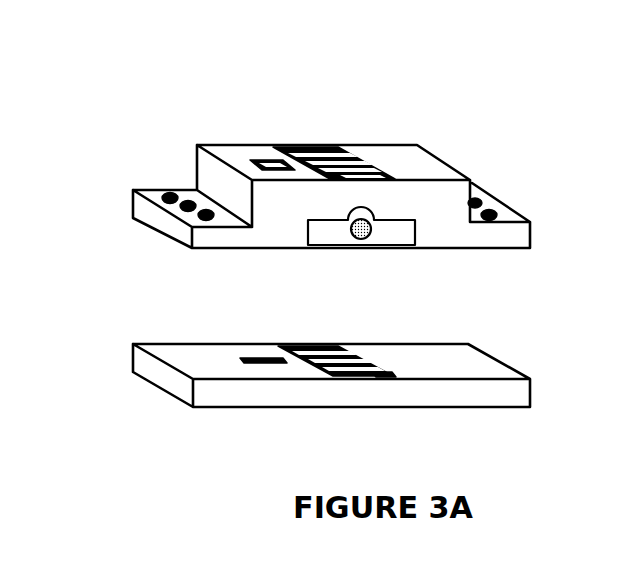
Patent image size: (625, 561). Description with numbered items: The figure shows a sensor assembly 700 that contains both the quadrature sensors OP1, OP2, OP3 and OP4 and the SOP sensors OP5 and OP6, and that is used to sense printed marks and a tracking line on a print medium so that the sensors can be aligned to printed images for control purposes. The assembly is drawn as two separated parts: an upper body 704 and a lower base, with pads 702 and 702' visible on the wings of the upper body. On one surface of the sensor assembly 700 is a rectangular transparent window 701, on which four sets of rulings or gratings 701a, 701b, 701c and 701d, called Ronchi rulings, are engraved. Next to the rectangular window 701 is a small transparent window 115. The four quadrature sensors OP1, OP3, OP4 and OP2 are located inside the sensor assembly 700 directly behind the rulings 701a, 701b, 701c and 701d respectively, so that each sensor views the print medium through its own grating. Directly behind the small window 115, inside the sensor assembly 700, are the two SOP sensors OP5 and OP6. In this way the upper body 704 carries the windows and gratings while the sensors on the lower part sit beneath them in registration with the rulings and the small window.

The sensor assembly 700 is at (97, 97).
The alignment pads 702 is at (174, 160).
The alignment pads 702' is at (523, 196).
The small transparent window 115 is at (273, 152).
The rectangular transparent window 701 is at (392, 148).
The ruling 701a is at (314, 147).
The ruling 701b is at (331, 148).
The ruling 701c is at (357, 152).
The ruling 701d is at (377, 165).
The upper carrier body 704 is at (383, 158).
The quadrature sensor OP1 is at (300, 358).
The quadrature sensor OP2 is at (377, 370).
The quadrature sensor OP3 is at (317, 358).
The quadrature sensor OP4 is at (347, 350).
The SOP sensor OP5 is at (255, 360).
The SOP sensor OP6 is at (283, 358).